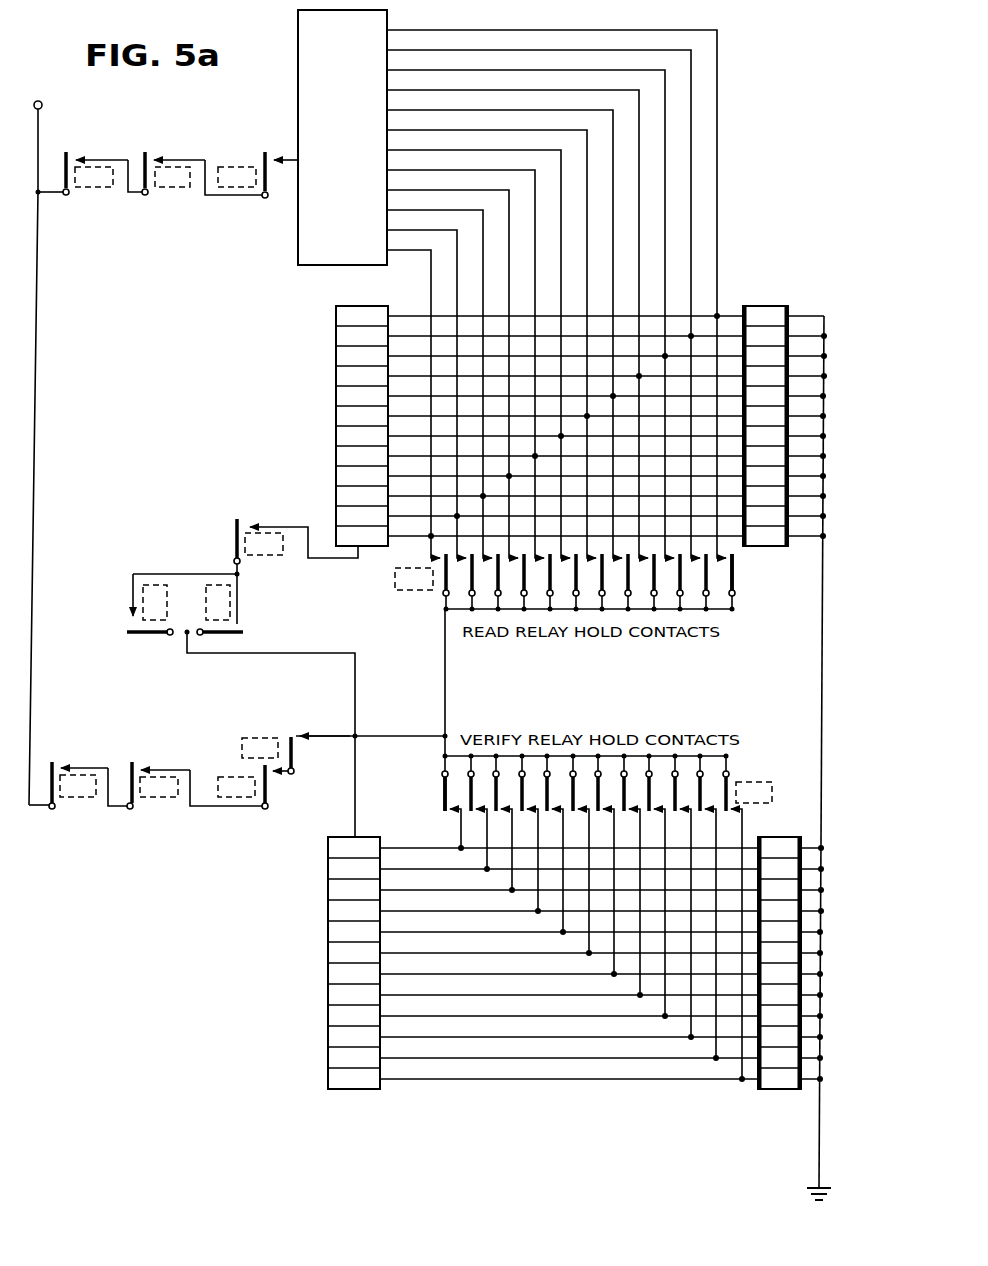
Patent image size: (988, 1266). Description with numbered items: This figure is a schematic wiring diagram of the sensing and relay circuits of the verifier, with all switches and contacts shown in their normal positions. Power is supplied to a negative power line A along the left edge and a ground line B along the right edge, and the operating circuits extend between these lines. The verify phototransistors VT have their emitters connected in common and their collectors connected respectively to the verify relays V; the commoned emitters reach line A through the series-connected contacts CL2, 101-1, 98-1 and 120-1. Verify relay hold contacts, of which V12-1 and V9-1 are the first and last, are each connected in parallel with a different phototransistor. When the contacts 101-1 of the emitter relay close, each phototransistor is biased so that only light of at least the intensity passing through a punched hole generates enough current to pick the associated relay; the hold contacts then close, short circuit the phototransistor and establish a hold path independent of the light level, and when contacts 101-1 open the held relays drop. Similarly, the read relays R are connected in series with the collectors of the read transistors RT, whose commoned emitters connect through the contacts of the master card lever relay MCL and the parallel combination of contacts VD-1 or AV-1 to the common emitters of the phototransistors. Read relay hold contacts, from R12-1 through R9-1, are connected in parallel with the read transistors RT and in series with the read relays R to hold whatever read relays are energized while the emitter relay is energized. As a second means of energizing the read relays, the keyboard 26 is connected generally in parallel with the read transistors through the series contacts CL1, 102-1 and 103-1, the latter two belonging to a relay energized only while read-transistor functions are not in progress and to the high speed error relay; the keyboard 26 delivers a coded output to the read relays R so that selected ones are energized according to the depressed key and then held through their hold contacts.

The keyboard 26 is at (298, 233).
The negative power line A is at (40, 120).
The card lever relay contacts CL1 is at (69, 158).
The contacts of relay 102 102-1 is at (151, 158).
The contacts of high speed error relay 103-1 is at (274, 157).
The read transistors RT is at (326, 386).
The read relays R is at (800, 583).
The read relay hold contact R9-1 is at (441, 560).
The read relay hold contact R12-1 is at (728, 556).
The ground line B is at (820, 680).
The master card lever relay MCL is at (256, 526).
The contacts of relay VD VD-1 is at (128, 621).
The contacts of automatic verify relay AV-1 is at (240, 622).
The verify relay hold contact V12-1 is at (449, 814).
The verify relay hold contact V9-1 is at (733, 813).
The verify phototransistors VT is at (318, 981).
The verify relays V is at (781, 1100).
The card lever relay contacts CL2 is at (62, 766).
The contacts of emitter relay 101-1 is at (140, 768).
The relay contacts 98-1 is at (275, 775).
The relay contacts 120-1 is at (299, 733).